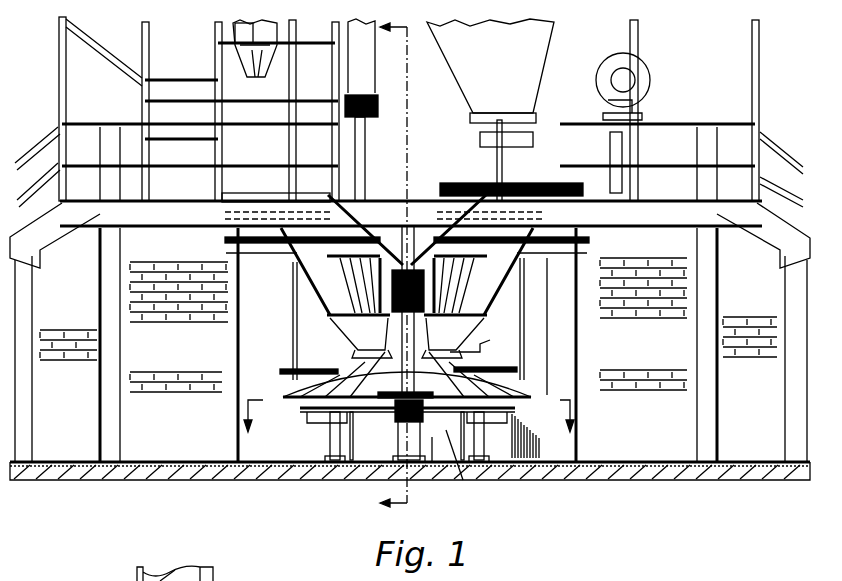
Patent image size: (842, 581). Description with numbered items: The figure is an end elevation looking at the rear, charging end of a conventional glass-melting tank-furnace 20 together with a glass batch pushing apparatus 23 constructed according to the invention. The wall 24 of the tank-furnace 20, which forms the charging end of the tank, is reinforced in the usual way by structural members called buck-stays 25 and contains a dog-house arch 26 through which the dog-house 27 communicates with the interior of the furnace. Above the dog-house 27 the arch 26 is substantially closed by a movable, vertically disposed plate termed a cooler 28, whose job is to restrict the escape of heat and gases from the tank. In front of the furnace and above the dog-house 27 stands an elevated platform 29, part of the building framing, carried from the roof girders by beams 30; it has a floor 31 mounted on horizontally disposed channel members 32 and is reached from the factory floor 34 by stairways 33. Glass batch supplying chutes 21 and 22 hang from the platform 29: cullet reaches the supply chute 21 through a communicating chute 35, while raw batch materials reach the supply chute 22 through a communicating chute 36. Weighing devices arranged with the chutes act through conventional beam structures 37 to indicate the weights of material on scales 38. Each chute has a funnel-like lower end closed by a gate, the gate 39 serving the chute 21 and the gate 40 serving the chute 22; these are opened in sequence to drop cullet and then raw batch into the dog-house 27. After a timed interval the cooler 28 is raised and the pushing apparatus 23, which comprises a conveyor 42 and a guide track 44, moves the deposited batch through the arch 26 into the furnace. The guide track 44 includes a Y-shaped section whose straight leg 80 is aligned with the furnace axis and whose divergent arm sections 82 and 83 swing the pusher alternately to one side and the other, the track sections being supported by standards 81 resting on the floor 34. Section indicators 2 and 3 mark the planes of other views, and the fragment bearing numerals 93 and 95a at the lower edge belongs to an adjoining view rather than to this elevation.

The glass-melting tank-furnace 20 is at (172, 427).
The glass batch supplying chute 21 is at (500, 302).
The glass batch supplying chute 22 is at (335, 281).
The glass batch pushing apparatus 23 is at (445, 428).
The wall 24 is at (210, 438).
The buck-stays 25 is at (107, 351).
The dog-house arch 26 is at (458, 393).
The dog-house 27 is at (432, 440).
The cooler 28 is at (312, 412).
The platform 29 is at (660, 200).
The beams 30 is at (62, 85).
The floor 31 is at (588, 195).
The channel members 32 is at (388, 200).
The stairways 33 is at (33, 230).
The factory floor 34 is at (610, 459).
The communicating chute 35 is at (268, 57).
The communicating chute 36 is at (503, 82).
The beam structures 37 is at (292, 257).
The scales 38 is at (235, 33).
The gate 39 is at (474, 338).
The gate 40 is at (322, 393).
The conveyor 42 is at (422, 296).
The guide track 44 is at (453, 411).
The leg 80 is at (403, 417).
The standards 81 is at (336, 433).
The arm section 82 is at (377, 413).
The arm section 83 is at (493, 413).
The section line 2- 2 is at (397, 53).
The section line 3- 3 is at (263, 450).
The fragment 93 is at (218, 573).
The fragment 95a is at (250, 580).